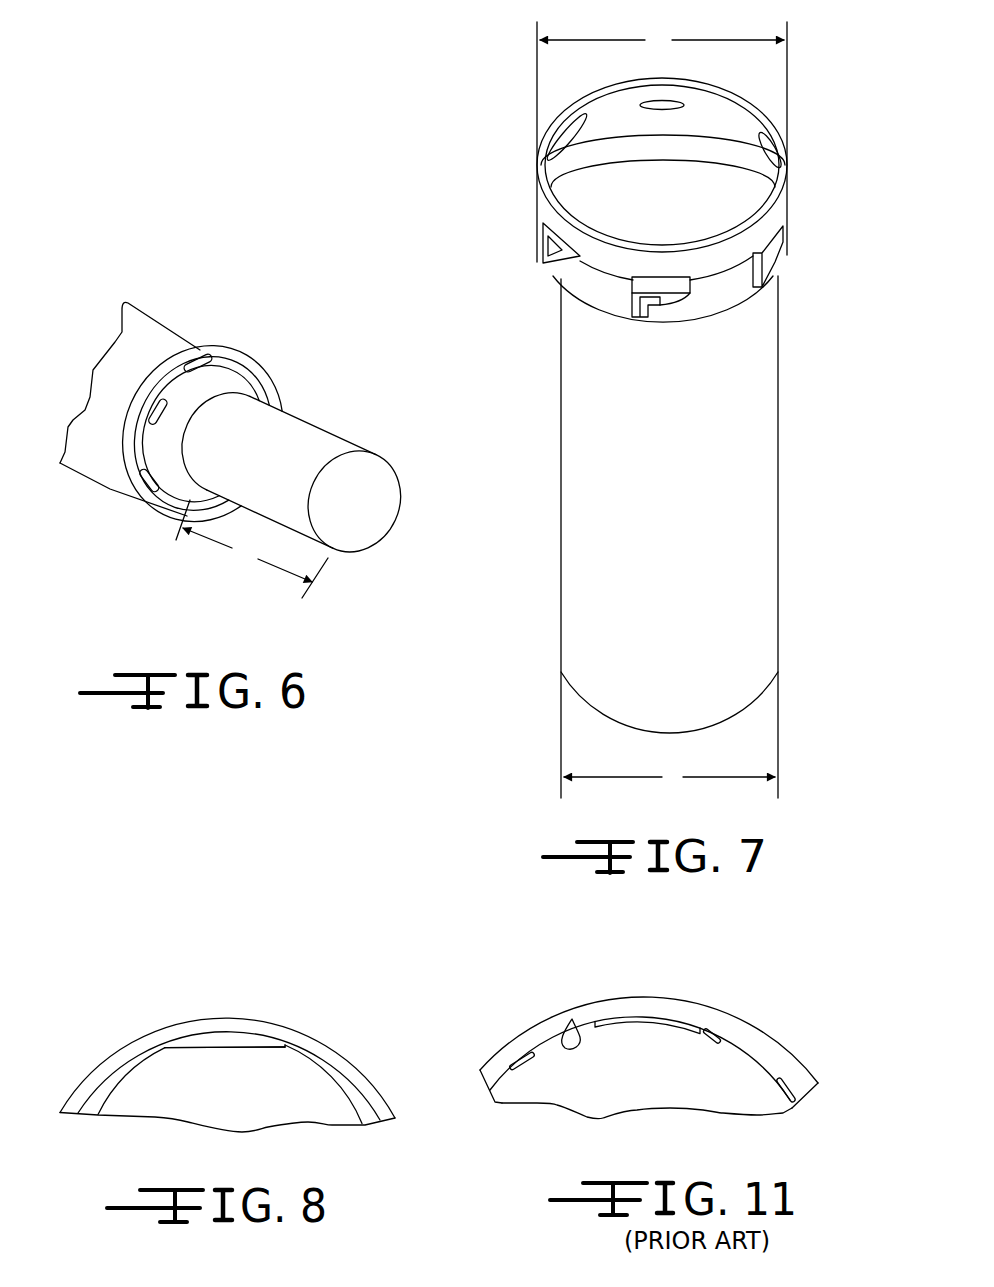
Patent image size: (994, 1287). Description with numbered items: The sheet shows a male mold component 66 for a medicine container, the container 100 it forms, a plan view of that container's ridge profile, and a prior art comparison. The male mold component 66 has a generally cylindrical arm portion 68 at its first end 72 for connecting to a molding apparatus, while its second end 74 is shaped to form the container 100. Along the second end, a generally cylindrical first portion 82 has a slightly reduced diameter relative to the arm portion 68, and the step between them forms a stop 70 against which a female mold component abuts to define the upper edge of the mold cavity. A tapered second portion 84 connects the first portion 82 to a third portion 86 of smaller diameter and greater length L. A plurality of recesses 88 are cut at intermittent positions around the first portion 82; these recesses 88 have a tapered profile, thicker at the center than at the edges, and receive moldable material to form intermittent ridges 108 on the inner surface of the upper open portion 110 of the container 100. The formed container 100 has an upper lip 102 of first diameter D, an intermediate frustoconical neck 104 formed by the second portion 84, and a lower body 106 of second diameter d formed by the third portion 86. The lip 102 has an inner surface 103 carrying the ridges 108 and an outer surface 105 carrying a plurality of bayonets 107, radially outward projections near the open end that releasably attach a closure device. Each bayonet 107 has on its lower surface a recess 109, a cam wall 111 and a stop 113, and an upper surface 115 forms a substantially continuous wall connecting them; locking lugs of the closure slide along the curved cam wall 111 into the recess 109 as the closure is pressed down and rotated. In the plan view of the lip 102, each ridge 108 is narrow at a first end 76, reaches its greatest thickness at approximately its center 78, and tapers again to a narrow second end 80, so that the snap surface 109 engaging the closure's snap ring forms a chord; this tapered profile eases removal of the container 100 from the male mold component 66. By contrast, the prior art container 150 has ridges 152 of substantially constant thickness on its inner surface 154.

In FIG. 6, the male mold component 66 is at (176, 210).
In FIG. 6, the arm portion 68 is at (140, 314).
In FIG. 6, the stop 70 is at (222, 348).
In FIG. 6, the first end 72 is at (106, 496).
In FIG. 6, the second end 74 is at (338, 409).
In FIG. 6, the first portion 82 is at (182, 500).
In FIG. 6, the second portion 84 is at (183, 517).
In FIG. 6, the third portion 86 is at (353, 541).
In FIG. 6, the recesses 88 is at (150, 406).
In FIG. 7, the container 100 is at (484, 77).
In FIG. 8, the container 100 is at (176, 961).
In FIG. 7, the lip 102 is at (538, 218).
In FIG. 8, the lip 102 is at (113, 1070).
In FIG. 7, the inner surface 103 is at (742, 127).
In FIG. 7, the neck 104 is at (732, 304).
In FIG. 7, the outer surface 105 is at (737, 252).
In FIG. 7, the body 106 is at (778, 588).
In FIG. 7, the bayonets 107 is at (556, 260).
In FIG. 7, the ridges 108 is at (587, 115).
In FIG. 8, the ridges 108 is at (198, 1058).
In FIG. 7, the recess 109 is at (650, 305).
In FIG. 8, the recess 109 is at (245, 1046).
In FIG. 7, the upper open portion 110 is at (491, 189).
In FIG. 7, the cam wall 111 is at (686, 302).
In FIG. 7, the stop 113 is at (646, 318).
In FIG. 7, the upper surface 115 is at (660, 284).
In FIG. 8, the first end 76 is at (186, 1047).
In FIG. 8, the center 78 is at (222, 1040).
In FIG. 8, the second end 80 is at (276, 1036).
In FIG. 11, the prior art container 150 is at (537, 1008).
In FIG. 11, the ridges 152 is at (517, 1062).
In FIG. 11, the inner surface 154 is at (572, 1019).